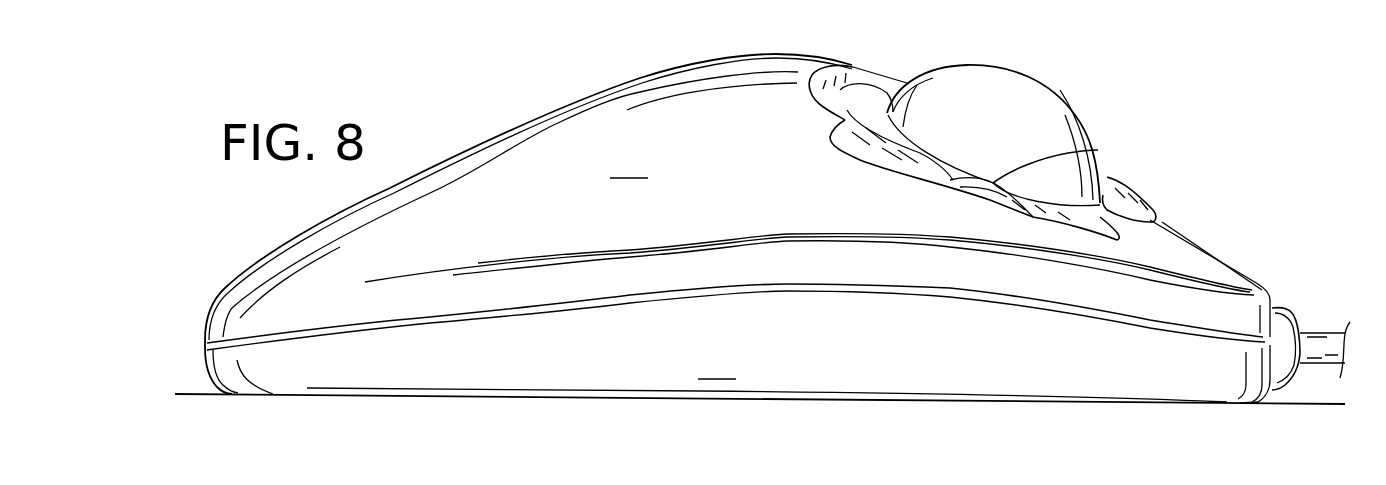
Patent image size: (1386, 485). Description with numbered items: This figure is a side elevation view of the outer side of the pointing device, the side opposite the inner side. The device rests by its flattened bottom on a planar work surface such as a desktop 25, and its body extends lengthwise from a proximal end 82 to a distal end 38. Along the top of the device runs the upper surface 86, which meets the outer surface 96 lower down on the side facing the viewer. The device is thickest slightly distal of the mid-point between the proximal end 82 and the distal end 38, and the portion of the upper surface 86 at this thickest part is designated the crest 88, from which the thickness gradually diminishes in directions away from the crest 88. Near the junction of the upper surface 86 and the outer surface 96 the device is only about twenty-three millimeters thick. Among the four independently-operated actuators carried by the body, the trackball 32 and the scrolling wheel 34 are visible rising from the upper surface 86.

The desktop 25 is at (192, 392).
The trackball 32 is at (1037, 73).
The scrolling wheel 34 is at (1098, 150).
The distal end 38 is at (1273, 296).
The proximal end 82 is at (205, 320).
The upper surface 86 is at (746, 204).
The crest 88 is at (773, 55).
The outer surface 96 is at (738, 343).